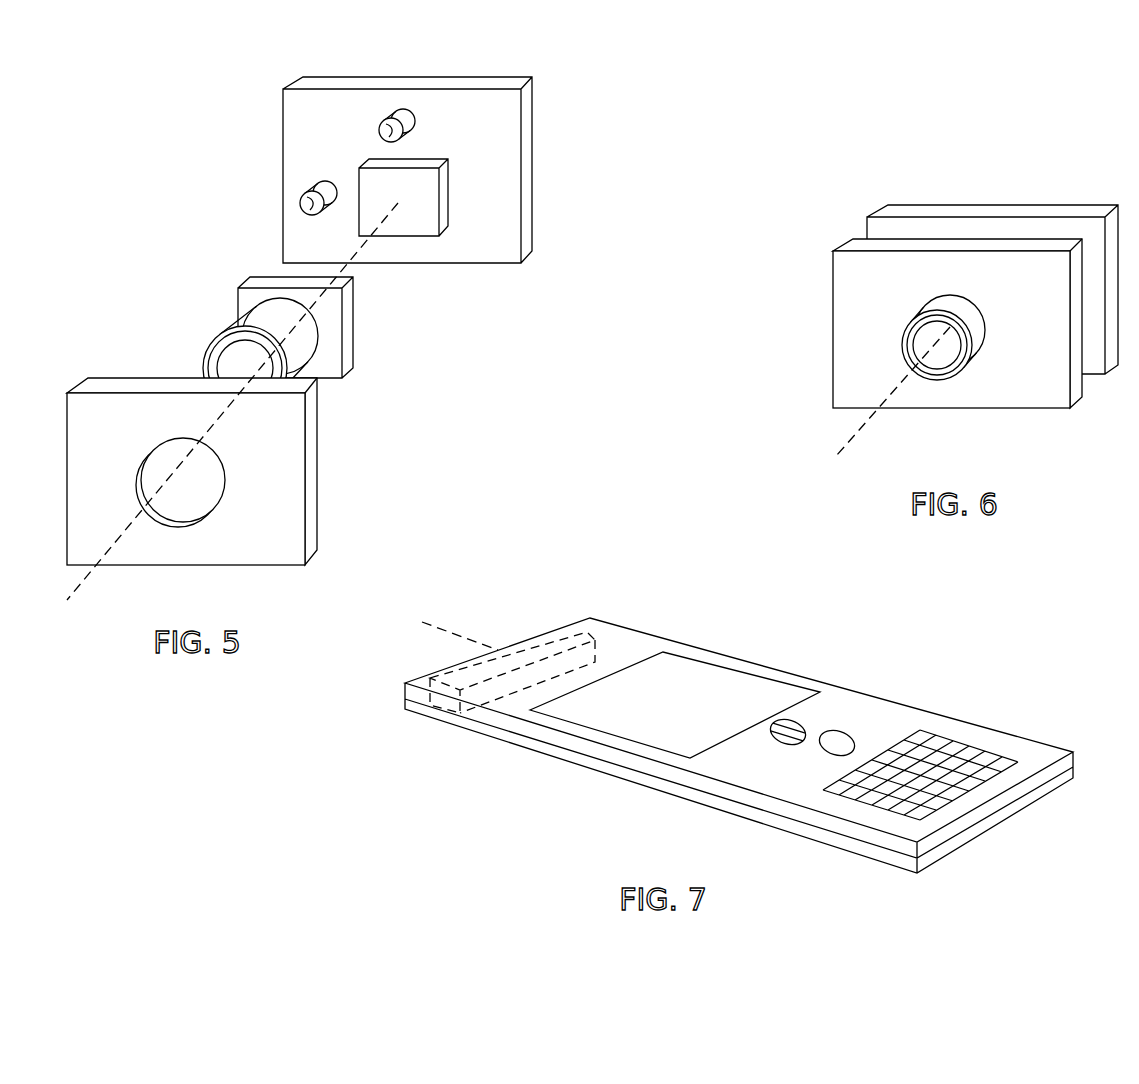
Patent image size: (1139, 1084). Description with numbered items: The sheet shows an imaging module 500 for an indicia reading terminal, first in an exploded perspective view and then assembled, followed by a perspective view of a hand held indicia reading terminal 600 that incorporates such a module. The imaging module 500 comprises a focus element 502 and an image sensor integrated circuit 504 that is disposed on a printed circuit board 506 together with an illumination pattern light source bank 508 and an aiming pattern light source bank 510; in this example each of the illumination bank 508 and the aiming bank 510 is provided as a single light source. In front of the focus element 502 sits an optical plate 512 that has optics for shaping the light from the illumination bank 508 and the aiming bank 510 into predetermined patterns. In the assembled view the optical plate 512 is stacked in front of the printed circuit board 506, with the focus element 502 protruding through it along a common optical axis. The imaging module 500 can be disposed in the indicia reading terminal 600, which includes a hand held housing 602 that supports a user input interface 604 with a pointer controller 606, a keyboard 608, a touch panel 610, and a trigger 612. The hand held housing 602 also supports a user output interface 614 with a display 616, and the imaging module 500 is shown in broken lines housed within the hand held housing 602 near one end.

In FIG. 5, the imaging module 500 is at (525, 45).
In FIG. 6, the imaging module 500 is at (1030, 147).
In FIG. 7, the imaging module 500 is at (548, 637).
In FIG. 5, the focus element 502 is at (187, 298).
In FIG. 6, the focus element 502 is at (953, 390).
In FIG. 5, the image sensor integrated circuit 504 is at (447, 222).
In FIG. 5, the printed circuit board 506 is at (511, 180).
In FIG. 6, the printed circuit board 506 is at (915, 226).
In FIG. 5, the illumination pattern light source bank 508 is at (320, 188).
In FIG. 5, the aiming pattern light source bank 510 is at (392, 106).
In FIG. 5, the optical plate 512 is at (298, 546).
In FIG. 6, the optical plate 512 is at (858, 261).
In FIG. 7, the indicia reading terminal 600 is at (668, 603).
In FIG. 7, the hand held housing 602 is at (1047, 753).
In FIG. 7, the user input interface 604 is at (743, 768).
In FIG. 7, the pointer controller 606 is at (810, 724).
In FIG. 7, the keyboard 608 is at (960, 740).
In FIG. 7, the touch panel 610 is at (718, 668).
In FIG. 7, the trigger 612 is at (853, 737).
In FIG. 7, the user output interface 614 is at (550, 713).
In FIG. 7, the display 616 is at (679, 687).